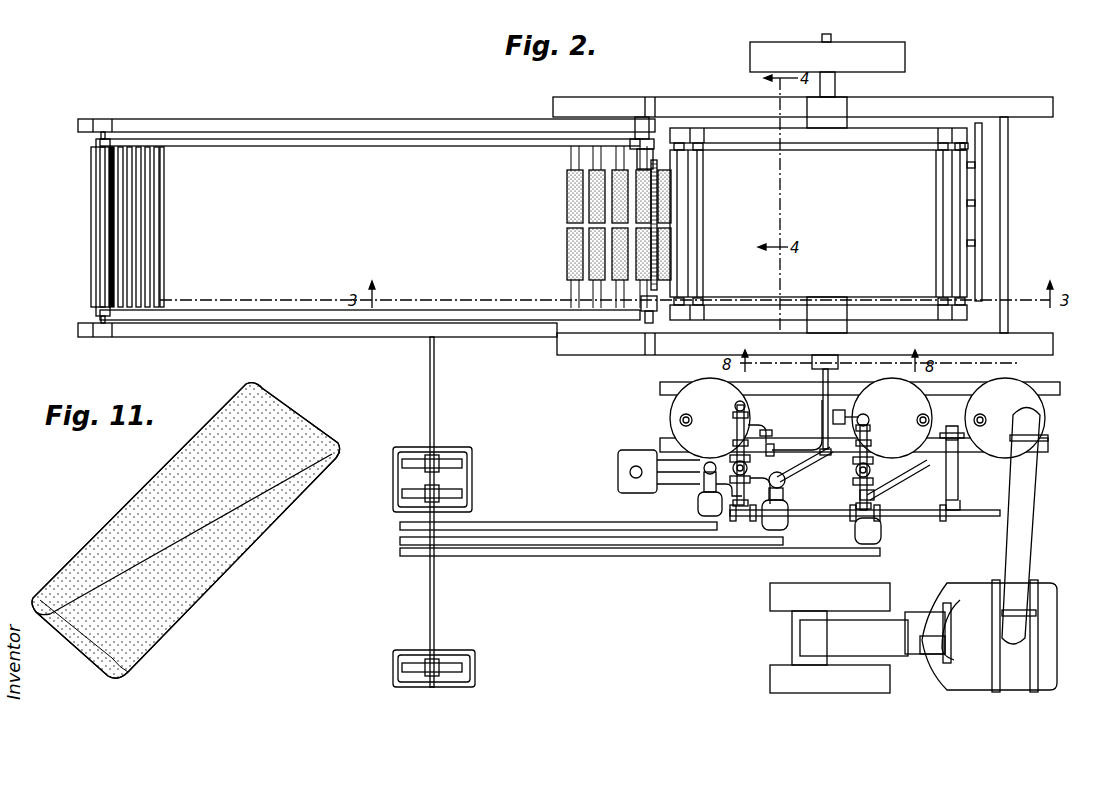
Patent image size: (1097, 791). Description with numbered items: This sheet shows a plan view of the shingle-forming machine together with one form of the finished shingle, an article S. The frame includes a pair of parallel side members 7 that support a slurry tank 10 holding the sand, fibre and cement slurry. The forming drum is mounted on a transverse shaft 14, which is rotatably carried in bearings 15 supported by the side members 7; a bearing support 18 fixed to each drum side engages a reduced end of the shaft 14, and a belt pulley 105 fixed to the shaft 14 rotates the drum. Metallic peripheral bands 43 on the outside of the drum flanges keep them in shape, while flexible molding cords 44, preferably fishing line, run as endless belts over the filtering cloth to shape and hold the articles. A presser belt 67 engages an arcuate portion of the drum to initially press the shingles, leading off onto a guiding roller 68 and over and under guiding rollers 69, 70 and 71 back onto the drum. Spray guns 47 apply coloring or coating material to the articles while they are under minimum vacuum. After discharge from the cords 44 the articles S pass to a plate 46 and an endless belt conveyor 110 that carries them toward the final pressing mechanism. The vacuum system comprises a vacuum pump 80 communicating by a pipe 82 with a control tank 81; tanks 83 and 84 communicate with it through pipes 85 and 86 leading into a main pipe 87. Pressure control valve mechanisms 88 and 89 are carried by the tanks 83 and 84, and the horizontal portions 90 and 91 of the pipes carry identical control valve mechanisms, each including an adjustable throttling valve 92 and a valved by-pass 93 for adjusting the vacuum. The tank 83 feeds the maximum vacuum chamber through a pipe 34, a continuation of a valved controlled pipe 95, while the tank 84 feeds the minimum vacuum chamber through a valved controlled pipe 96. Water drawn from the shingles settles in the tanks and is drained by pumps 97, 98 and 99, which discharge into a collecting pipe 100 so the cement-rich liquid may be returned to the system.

In FIG. 2, the side members 7 is at (925, 103).
In FIG. 2, the slurry tank 10 is at (968, 118).
In FIG. 2, the transverse shaft 14 is at (833, 38).
In FIG. 2, the bearings 15 is at (832, 115).
In FIG. 2, the bearing support 18 is at (842, 360).
In FIG. 2, the pipe 34 is at (820, 392).
In FIG. 2, the metallic peripheral bands 43 is at (648, 318).
In FIG. 2, the flexible molding cords 44 is at (658, 242).
In FIG. 2, the plate 46 is at (647, 150).
In FIG. 2, the spray guns 47 is at (982, 230).
In FIG. 2, the presser belt 67 is at (818, 223).
In FIG. 2, the guiding roller 68 is at (682, 140).
In FIG. 2, the guiding roller 69 is at (706, 145).
In FIG. 2, the guiding roller 70 is at (940, 150).
In FIG. 2, the guiding roller 71 is at (968, 148).
In FIG. 2, the vacuum pump 80 is at (972, 660).
In FIG. 2, the tank 81 is at (1020, 396).
In FIG. 2, the pipe 82 is at (1012, 532).
In FIG. 2, the tank 83 is at (708, 386).
In FIG. 2, the tank 84 is at (912, 396).
In FIG. 2, the pipe 85 is at (735, 449).
In FIG. 2, the pipe 86 is at (872, 425).
In FIG. 2, the main pipe 87 is at (830, 516).
In FIG. 2, the pressure control valve mechanism 88 is at (690, 409).
In FIG. 2, the pressure control valve mechanism 89 is at (922, 426).
In FIG. 2, the horizontal portion 90 is at (870, 440).
In FIG. 2, the horizontal portion 91 is at (734, 460).
In FIG. 2, the adjustable valve 92 is at (872, 472).
In FIG. 2, the valved by-pass 93 is at (850, 484).
In FIG. 2, the valved controlled pipe 95 is at (790, 450).
In FIG. 2, the valved controlled pipe 96 is at (866, 416).
In FIG. 2, the pump 97 is at (700, 504).
In FIG. 2, the pump 98 is at (782, 522).
In FIG. 2, the pump 99 is at (881, 534).
In FIG. 2, the collecting pipe 100 is at (620, 480).
In FIG. 2, the belt pulley 105 is at (900, 52).
In FIG. 2, the endless belt conveyor 110 is at (150, 150).
In FIG. 2, the articles S is at (572, 206).
In FIG. 11, the articles S is at (160, 472).